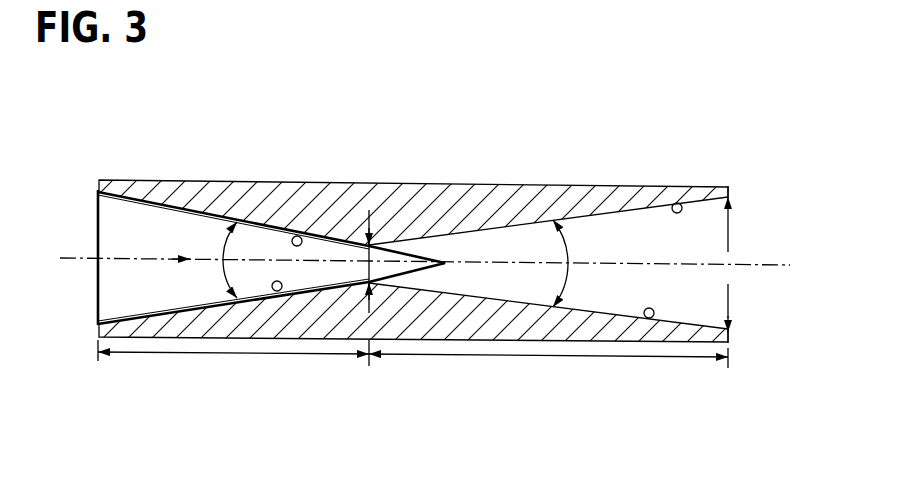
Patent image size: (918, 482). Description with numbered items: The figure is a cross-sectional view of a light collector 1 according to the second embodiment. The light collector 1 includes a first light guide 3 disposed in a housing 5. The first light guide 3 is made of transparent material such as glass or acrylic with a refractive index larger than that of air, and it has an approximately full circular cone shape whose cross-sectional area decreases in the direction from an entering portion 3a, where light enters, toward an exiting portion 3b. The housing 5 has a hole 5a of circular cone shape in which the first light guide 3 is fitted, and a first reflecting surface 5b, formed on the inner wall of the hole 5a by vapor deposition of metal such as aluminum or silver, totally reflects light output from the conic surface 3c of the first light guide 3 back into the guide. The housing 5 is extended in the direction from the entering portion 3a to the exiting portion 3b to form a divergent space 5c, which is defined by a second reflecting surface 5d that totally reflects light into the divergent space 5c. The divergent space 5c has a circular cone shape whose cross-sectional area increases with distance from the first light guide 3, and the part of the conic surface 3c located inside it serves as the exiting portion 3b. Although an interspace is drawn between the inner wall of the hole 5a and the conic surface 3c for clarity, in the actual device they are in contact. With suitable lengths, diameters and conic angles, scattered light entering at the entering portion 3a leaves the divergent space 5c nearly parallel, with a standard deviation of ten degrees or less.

The light collector 1 is at (344, 120).
The first light guide 3 is at (189, 219).
The entering portion 3a is at (112, 220).
The exiting portion 3b is at (432, 250).
The conic surface 3c is at (298, 236).
The housing 5 is at (533, 186).
The hole 5a is at (258, 218).
The first reflecting surface 5b is at (341, 232).
The divergent space 5c is at (705, 222).
The second reflecting surface 5d is at (677, 203).